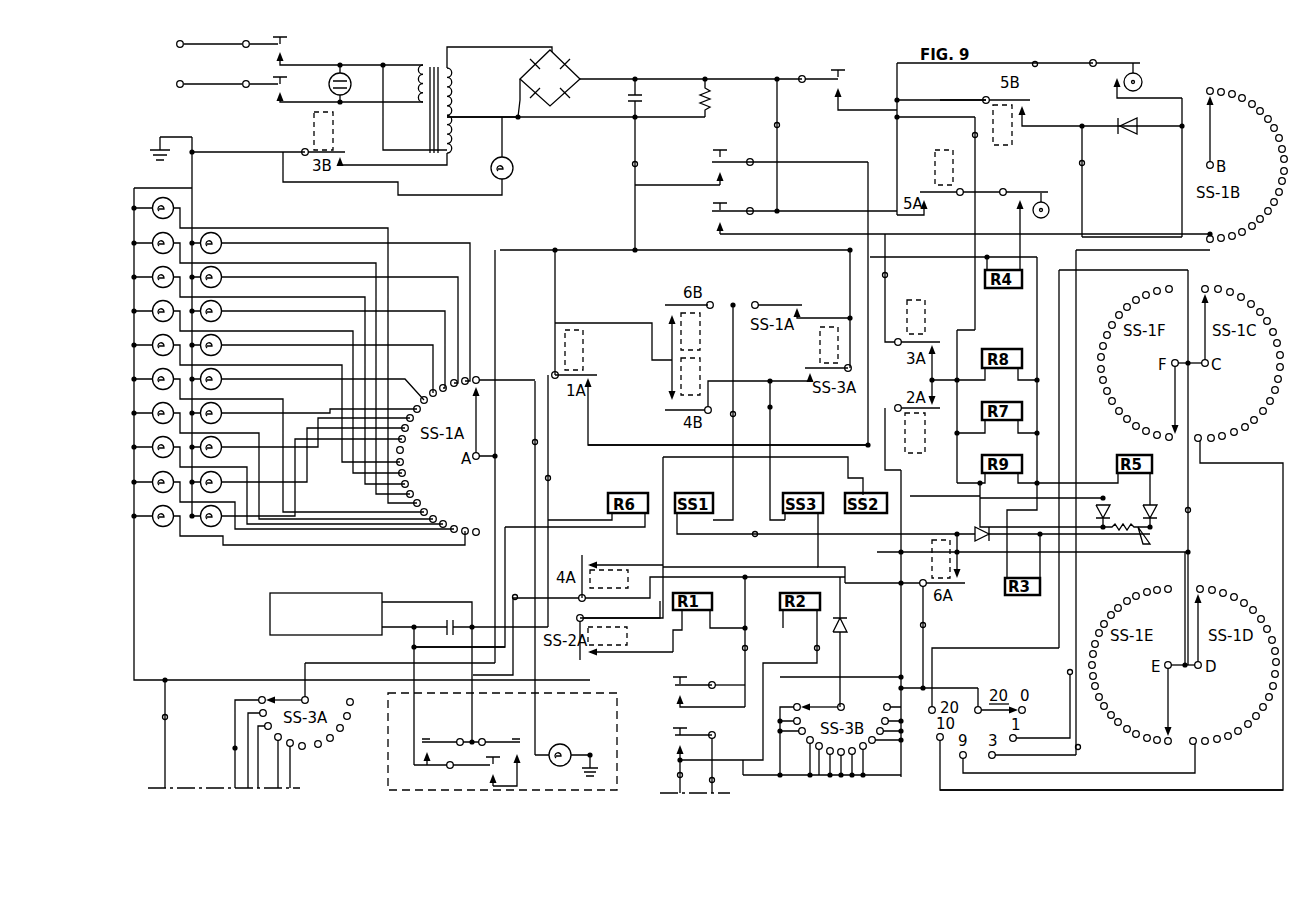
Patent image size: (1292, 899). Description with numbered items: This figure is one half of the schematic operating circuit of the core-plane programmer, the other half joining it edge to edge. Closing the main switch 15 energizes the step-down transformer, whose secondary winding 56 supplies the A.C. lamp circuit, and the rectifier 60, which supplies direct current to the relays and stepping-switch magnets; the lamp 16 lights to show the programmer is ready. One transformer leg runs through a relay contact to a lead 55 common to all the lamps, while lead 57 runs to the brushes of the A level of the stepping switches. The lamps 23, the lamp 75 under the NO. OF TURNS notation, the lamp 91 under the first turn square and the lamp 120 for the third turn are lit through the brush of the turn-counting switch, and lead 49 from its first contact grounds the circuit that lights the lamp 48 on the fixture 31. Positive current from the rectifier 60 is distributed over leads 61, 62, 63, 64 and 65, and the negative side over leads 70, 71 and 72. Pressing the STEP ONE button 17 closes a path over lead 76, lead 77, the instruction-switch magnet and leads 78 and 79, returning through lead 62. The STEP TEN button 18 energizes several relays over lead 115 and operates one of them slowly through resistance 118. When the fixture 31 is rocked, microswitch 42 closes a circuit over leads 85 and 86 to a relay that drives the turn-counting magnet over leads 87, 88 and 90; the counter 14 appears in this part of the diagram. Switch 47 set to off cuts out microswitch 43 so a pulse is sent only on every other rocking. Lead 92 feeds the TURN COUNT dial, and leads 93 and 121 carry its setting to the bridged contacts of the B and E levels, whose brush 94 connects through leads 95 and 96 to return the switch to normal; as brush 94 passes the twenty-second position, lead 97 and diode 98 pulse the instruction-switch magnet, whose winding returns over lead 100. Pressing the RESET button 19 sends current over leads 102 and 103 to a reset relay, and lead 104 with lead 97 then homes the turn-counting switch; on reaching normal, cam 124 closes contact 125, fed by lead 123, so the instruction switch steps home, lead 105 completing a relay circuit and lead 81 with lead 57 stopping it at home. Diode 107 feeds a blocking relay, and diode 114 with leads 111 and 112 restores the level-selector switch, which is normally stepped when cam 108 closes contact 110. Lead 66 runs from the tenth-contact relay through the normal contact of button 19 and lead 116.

The counter 14 is at (370, 593).
The main switch 15 is at (270, 78).
The lamp 16 is at (350, 82).
The STEP ONE button 17 is at (735, 170).
The STEP TEN button 18 is at (812, 74).
The RESET button 19 is at (676, 725).
The lamps 23 is at (168, 197).
The fixture 31 is at (614, 688).
The microswitch 42 is at (432, 740).
The microswitch 43 is at (513, 740).
The switch 47 is at (485, 771).
The lamp 48 is at (556, 768).
The lead 49 is at (532, 441).
The lead 55 is at (230, 153).
The secondary winding 56 is at (449, 132).
The lead 57 is at (498, 296).
The rectifier 60 is at (559, 87).
The lead 61 is at (663, 79).
The lead 62 is at (781, 126).
The lead 63 is at (808, 211).
The lead 64 is at (1022, 553).
The lead 65 is at (740, 649).
The lead 66 is at (812, 649).
The lead 70 is at (612, 122).
The lead 71 is at (630, 166).
The lead 72 is at (660, 251).
The lamp 75 is at (513, 165).
The lead 76 is at (660, 186).
The lead 77 is at (815, 163).
The lead 78 is at (889, 276).
The lead 79 is at (812, 237).
The lead 81 is at (232, 748).
The lead 85 is at (517, 594).
The lead 86 is at (411, 736).
The lead 87 is at (755, 537).
The lead 88 is at (737, 415).
The lead 90 is at (598, 325).
The lamp 91 is at (222, 238).
The lead 92 is at (927, 626).
The lead 93 is at (1066, 672).
The brush 94 is at (1213, 134).
The lead 95 is at (1192, 511).
The lead 96 is at (1122, 554).
The lead 97 is at (1086, 164).
The diode 98 is at (1134, 118).
The lead 100 is at (790, 446).
The lead 102 is at (755, 777).
The lead 103 is at (922, 494).
The lead 104 is at (948, 100).
The lead 105 is at (660, 470).
The diode 107 is at (975, 530).
The cam 108 is at (1048, 216).
The contact 110 is at (1025, 191).
The lead 111 is at (703, 565).
The lead 112 is at (774, 407).
The diode 114 is at (850, 625).
The lead 115 is at (972, 134).
The lead 116 is at (715, 782).
The resistance 118 is at (1160, 541).
The lamp 120 is at (222, 272).
The lead 121 is at (1082, 750).
The lead 123 is at (1040, 64).
The cam 124 is at (1143, 80).
The contact 125 is at (1112, 62).